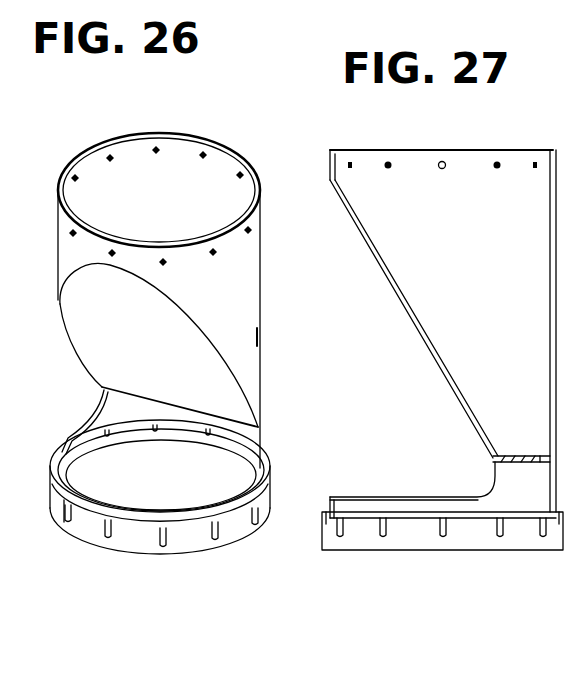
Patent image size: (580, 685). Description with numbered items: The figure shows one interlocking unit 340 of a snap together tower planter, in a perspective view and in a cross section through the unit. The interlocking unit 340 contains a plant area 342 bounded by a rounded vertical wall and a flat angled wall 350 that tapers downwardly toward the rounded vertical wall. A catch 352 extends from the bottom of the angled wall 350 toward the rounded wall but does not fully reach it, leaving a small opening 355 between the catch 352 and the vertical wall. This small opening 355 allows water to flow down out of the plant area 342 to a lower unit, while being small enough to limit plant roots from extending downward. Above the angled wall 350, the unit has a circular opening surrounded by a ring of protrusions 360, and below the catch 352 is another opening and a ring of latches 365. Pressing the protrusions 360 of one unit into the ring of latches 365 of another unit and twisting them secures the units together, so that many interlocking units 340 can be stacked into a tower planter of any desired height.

In FIG. 26, the interlocking unit 340 is at (221, 141).
In FIG. 27, the interlocking unit 340 is at (490, 148).
In FIG. 27, the plant area 342 is at (488, 270).
In FIG. 26, the flat angled wall 350 is at (168, 348).
In FIG. 27, the flat angled wall 350 is at (412, 328).
In FIG. 27, the catch 352 is at (518, 454).
In FIG. 27, the small opening 355 is at (547, 458).
In FIG. 26, the ring of protrusions 360 is at (109, 154).
In FIG. 27, the ring of protrusions 360 is at (388, 160).
In FIG. 26, the ring of latches 365 is at (95, 527).
In FIG. 27, the ring of latches 365 is at (358, 540).